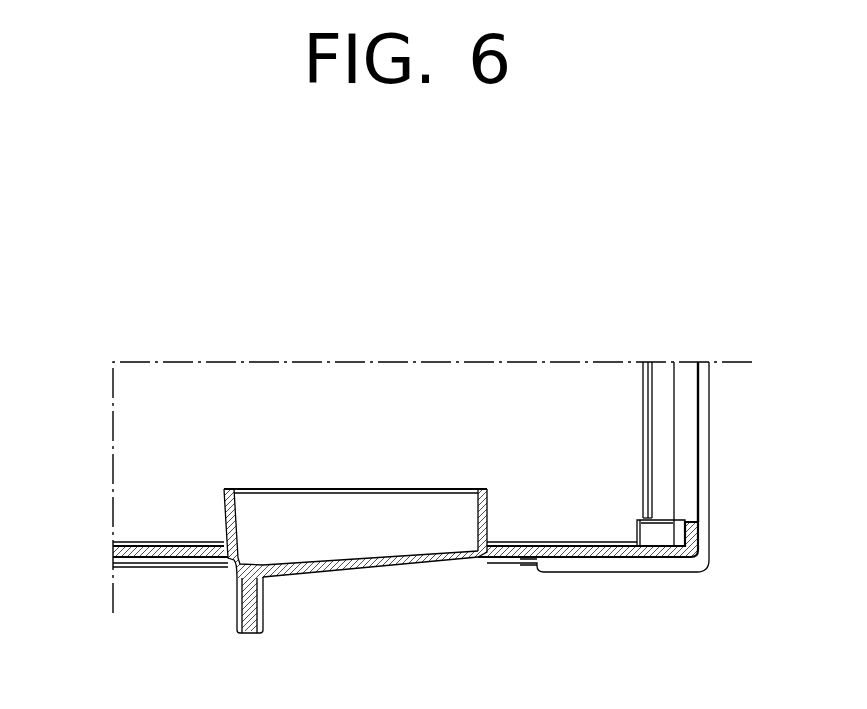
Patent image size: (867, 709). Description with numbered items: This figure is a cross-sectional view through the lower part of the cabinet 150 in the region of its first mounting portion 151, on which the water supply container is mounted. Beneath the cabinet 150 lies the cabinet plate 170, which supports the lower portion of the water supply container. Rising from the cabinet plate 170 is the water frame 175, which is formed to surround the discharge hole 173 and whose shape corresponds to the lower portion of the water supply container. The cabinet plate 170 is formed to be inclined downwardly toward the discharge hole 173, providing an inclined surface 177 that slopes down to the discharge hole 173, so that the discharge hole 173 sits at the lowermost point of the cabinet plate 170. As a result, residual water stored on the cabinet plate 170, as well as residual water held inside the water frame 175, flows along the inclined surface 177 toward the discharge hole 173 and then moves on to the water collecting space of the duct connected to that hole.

The cabinet 150 is at (707, 433).
The first mounting portion 151 is at (156, 441).
The cabinet plate 170 is at (550, 543).
The discharge hole 173 is at (231, 564).
The water frame 175 is at (226, 512).
The inclined surface 177 is at (375, 563).